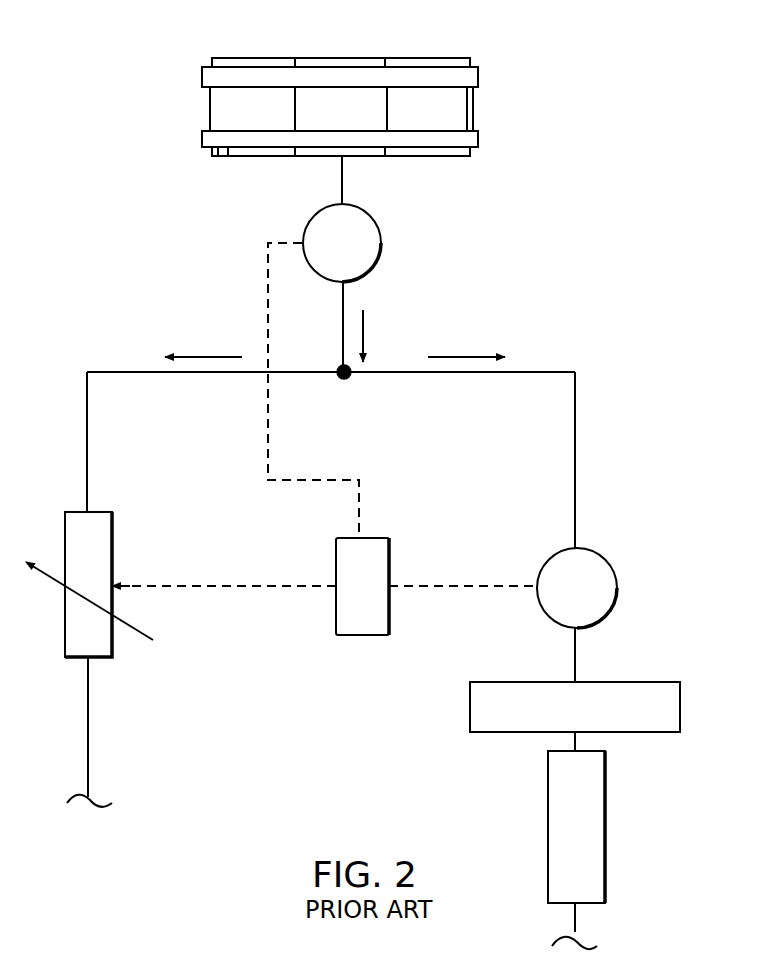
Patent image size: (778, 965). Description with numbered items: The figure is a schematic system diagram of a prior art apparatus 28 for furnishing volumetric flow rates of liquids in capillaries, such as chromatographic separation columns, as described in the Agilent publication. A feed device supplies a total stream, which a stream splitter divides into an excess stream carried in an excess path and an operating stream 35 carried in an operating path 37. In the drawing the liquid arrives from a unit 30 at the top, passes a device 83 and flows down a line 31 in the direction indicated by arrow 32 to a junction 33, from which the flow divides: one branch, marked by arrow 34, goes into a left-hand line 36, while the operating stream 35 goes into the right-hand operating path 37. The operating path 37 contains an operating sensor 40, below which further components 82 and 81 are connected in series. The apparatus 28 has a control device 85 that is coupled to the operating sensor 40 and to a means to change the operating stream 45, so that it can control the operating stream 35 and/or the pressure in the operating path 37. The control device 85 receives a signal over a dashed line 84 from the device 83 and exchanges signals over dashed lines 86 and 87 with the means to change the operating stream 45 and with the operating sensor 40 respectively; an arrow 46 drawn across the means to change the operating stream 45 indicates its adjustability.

The apparatus 28 is at (637, 222).
The engine 30 is at (335, 78).
The fuel line 31 is at (345, 310).
The fuel flow direction arrow 32 is at (367, 333).
The junction node 33 is at (345, 378).
The flow direction arrow 34 is at (190, 355).
The operating stream 35 is at (455, 355).
The left branch line 36 is at (88, 448).
The operating path 37 is at (577, 450).
The operating sensor 40 is at (613, 565).
The means to change the operating stream 45 is at (65, 630).
The valve adjustment arrow 46 is at (147, 632).
The fuel tank 81 is at (607, 833).
The filter 82 is at (682, 703).
The sensor 83 is at (380, 238).
The sensor signal line 84 is at (268, 302).
The control device 85 is at (362, 637).
The control signal line to valve 86 is at (240, 585).
The control signal line to pump 87 is at (467, 585).